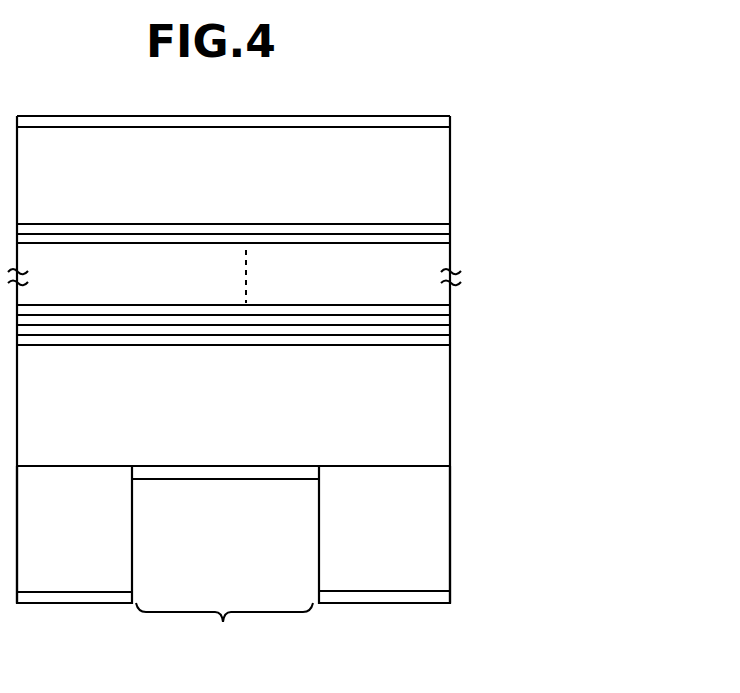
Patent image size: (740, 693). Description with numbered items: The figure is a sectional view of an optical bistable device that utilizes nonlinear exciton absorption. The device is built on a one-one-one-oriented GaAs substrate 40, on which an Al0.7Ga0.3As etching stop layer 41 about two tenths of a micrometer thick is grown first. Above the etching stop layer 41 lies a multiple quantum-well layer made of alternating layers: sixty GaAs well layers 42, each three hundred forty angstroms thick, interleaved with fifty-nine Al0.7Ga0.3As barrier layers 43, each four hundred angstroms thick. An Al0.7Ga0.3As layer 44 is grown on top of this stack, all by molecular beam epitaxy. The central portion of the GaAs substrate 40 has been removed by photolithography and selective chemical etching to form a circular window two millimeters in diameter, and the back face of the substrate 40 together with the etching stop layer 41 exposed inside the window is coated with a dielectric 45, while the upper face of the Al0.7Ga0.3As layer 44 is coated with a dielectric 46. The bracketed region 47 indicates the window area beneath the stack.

The GaAs substrate 40 is at (427, 503).
The etching stop layer 41 is at (430, 413).
The GaAs well layers 42 is at (451, 228).
The Al0.7Ga0.3As barrier layers 43 is at (451, 238).
The Al0.7Ga0.3As layer 44 is at (433, 187).
The dielectric 45 is at (245, 470).
The dielectric 46 is at (443, 123).
The recess / gate region 47 is at (223, 622).